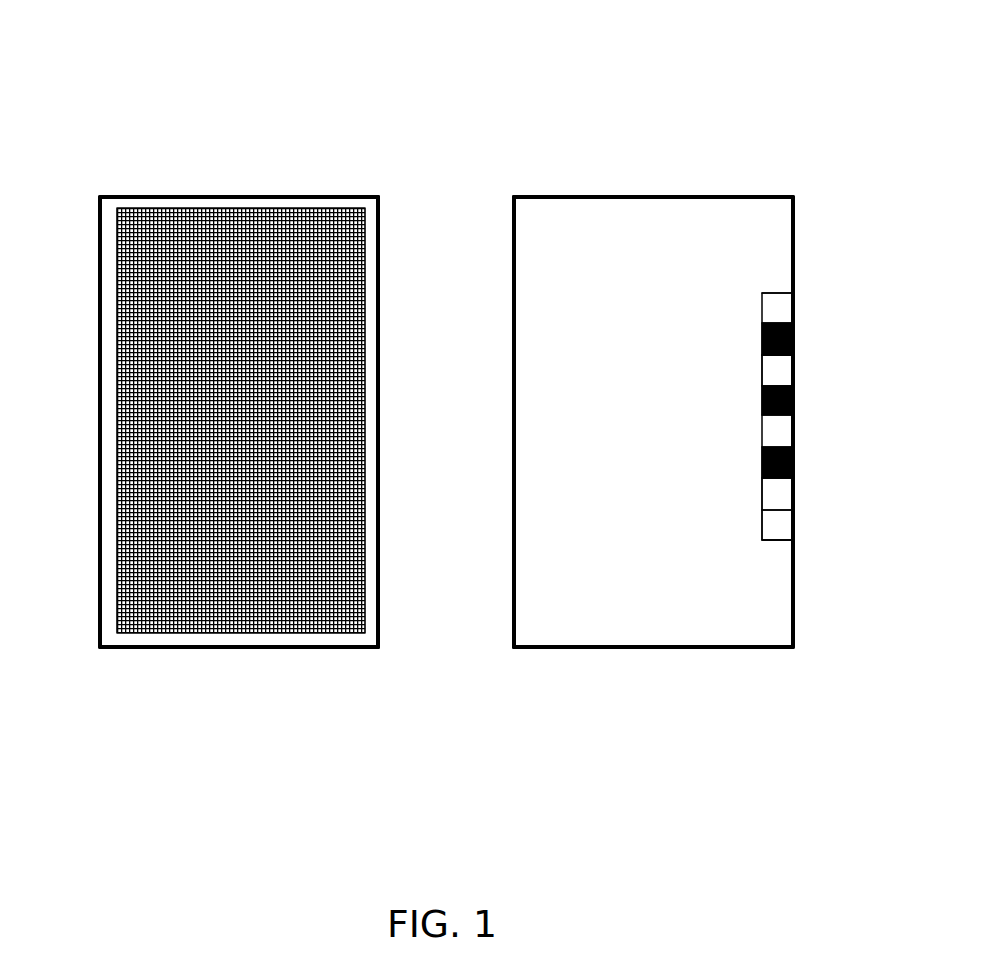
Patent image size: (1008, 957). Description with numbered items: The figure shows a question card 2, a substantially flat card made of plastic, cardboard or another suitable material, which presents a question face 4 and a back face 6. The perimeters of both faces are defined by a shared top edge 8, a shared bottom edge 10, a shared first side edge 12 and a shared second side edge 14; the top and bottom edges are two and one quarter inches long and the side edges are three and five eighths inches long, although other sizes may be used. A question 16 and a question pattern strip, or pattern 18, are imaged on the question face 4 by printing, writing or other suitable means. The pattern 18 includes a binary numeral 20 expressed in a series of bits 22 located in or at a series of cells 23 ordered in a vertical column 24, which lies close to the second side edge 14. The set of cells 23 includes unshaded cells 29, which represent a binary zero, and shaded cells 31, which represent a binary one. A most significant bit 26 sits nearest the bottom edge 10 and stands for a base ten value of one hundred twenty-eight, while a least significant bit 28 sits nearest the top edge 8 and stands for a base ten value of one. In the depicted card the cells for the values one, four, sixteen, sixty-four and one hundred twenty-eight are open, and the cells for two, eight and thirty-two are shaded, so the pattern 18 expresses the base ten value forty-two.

The question card 2 is at (436, 89).
The question face 4 is at (605, 220).
The back face 6 is at (283, 210).
The top edge 8 is at (533, 195).
The bottom edge 10 is at (540, 657).
The first side edge 12 is at (513, 625).
The second side edge 14 is at (97, 532).
The question 16 is at (673, 307).
The question pattern strip 18 is at (830, 300).
The binary numeral 20 is at (833, 565).
The bits 22 is at (795, 409).
The cells 23 is at (830, 365).
The vertical column 24 is at (773, 542).
The most significant bit 26 is at (790, 542).
The least significant bit 28 is at (769, 293).
The unshaded cells 29 is at (777, 530).
The shaded cells 31 is at (793, 467).